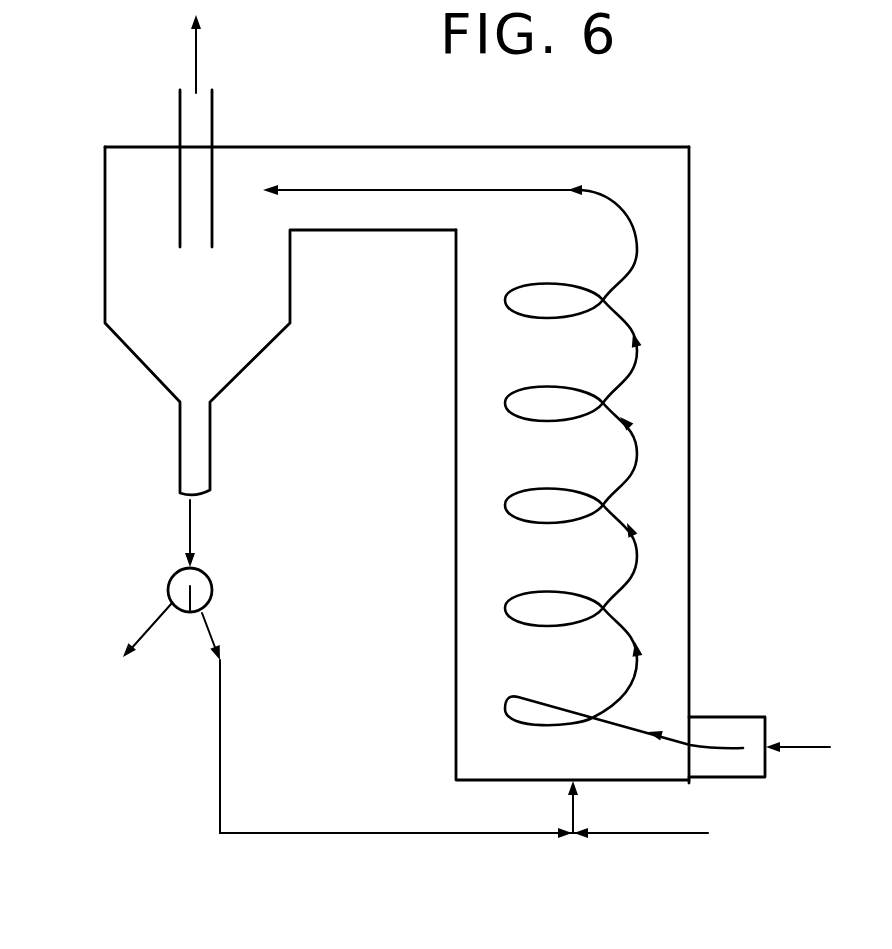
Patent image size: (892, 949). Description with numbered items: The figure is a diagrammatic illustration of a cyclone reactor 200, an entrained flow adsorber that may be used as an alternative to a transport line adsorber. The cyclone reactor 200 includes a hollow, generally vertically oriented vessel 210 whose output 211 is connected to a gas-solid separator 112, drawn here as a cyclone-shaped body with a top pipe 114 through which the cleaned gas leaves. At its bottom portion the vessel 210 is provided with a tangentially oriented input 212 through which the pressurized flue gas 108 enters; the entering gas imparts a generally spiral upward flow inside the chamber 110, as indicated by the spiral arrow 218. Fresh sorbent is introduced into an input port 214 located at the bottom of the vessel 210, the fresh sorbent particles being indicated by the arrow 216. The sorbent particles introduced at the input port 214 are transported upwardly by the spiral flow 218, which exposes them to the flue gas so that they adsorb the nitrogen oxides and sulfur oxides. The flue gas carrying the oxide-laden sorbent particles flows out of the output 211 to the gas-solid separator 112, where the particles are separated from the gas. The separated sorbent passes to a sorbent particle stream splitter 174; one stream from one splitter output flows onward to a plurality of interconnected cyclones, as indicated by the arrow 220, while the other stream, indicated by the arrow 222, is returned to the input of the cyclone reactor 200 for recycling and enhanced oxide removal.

The cyclone reactor 200 is at (645, 97).
The gas-solid separator 112 is at (105, 222).
The flue gas outlet pipe 114 is at (197, 63).
The output 211 is at (340, 146).
The vessel 210 is at (692, 456).
The combustion chamber 110 is at (663, 343).
The spiral arrow 218 is at (635, 283).
The tangentially oriented input 212 is at (777, 672).
The pressurized flue gas 108 is at (806, 748).
The sorbent particle stream splitter 174 is at (214, 587).
The arrow 220 is at (157, 620).
The arrow 222 is at (214, 629).
The arrow 216 is at (651, 838).
The input port 214 is at (573, 812).